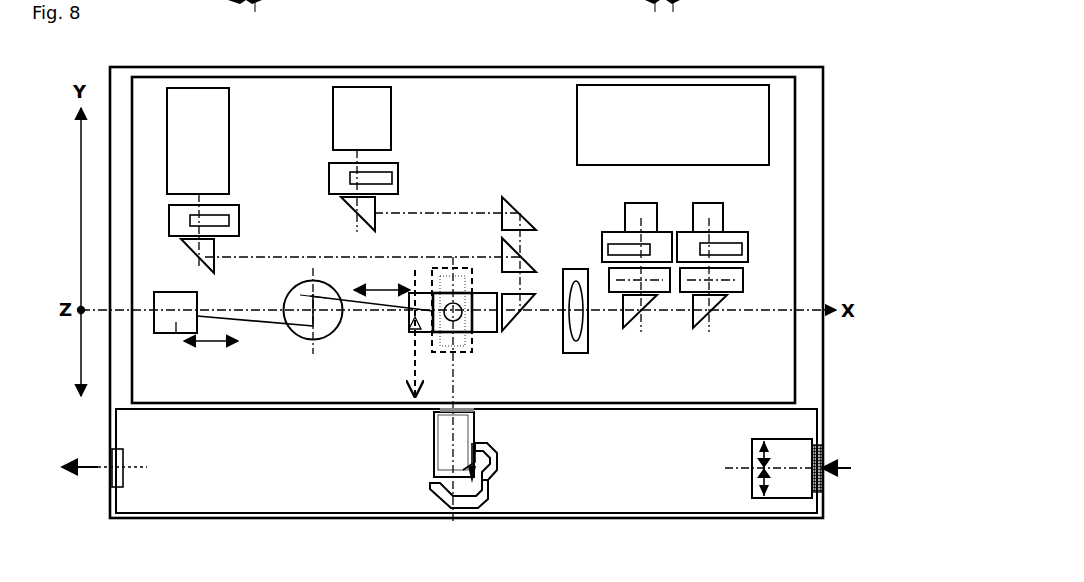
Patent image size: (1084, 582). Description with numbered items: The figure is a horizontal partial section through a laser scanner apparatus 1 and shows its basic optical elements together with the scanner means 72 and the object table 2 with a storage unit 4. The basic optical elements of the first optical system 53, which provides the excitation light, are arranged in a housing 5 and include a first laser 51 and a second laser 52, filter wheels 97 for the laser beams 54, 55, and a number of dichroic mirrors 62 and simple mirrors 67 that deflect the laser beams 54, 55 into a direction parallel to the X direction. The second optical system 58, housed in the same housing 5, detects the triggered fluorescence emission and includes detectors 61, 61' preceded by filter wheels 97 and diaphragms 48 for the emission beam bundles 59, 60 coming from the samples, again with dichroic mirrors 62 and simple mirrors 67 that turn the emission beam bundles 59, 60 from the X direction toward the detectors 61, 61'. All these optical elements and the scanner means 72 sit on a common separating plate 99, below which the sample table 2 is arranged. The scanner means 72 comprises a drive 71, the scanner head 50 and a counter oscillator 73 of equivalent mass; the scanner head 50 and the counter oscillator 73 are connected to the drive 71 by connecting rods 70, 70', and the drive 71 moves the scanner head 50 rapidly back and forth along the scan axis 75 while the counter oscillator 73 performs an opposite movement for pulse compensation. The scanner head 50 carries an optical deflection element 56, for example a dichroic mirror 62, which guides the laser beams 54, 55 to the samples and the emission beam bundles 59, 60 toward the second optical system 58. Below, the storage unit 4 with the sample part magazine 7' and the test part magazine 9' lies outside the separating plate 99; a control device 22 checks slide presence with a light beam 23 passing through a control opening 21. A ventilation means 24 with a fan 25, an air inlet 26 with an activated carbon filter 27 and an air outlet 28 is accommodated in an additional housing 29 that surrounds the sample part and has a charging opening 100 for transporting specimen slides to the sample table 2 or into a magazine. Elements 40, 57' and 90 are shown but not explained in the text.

The laser scanner apparatus 1 is at (754, 57).
The object table 2 is at (423, 333).
The storage unit 4 is at (400, 445).
The housing 5 is at (470, 67).
The sample part magazine 7' is at (413, 443).
The test part magazine 9' is at (410, 459).
The control opening 21 is at (490, 478).
The control device 22 is at (495, 484).
The light beam 23 is at (488, 457).
The ventilation means 24 is at (132, 457).
The fan 25 is at (752, 462).
The air inlet 26 is at (840, 466).
The activated carbon filter 27 is at (812, 478).
The air outlet 28 is at (85, 470).
The additional housing 29 is at (170, 511).
The control unit 40 is at (673, 125).
The diaphragm 48 is at (733, 280).
The scanner head 50 is at (468, 336).
The first laser 51 is at (198, 141).
The second laser 52 is at (362, 118).
The first optical system 53 is at (467, 183).
The laser beam 54 is at (340, 256).
The laser beam 55 is at (455, 212).
The optical deflection element 56 is at (412, 327).
The lens 57' is at (588, 327).
The second optical system 58 is at (720, 346).
The emission beam bundle 59 is at (630, 316).
The emission beam bundle 60 is at (639, 280).
The detector 61 is at (649, 202).
The detector 61' is at (707, 202).
The dichroic mirror 62 is at (520, 262).
The simple mirror 67 is at (206, 263).
The connecting rod 70 is at (359, 322).
The connecting rod 70' is at (284, 293).
The drive 71 is at (308, 338).
The scanner means 72 is at (278, 346).
The counter oscillator 73 is at (175, 355).
The scan axis 75 is at (382, 278).
The beam splitter module 90 is at (422, 292).
The filter wheel 97 is at (229, 219).
The separating plate 99 is at (250, 440).
The charging opening 100 is at (446, 401).